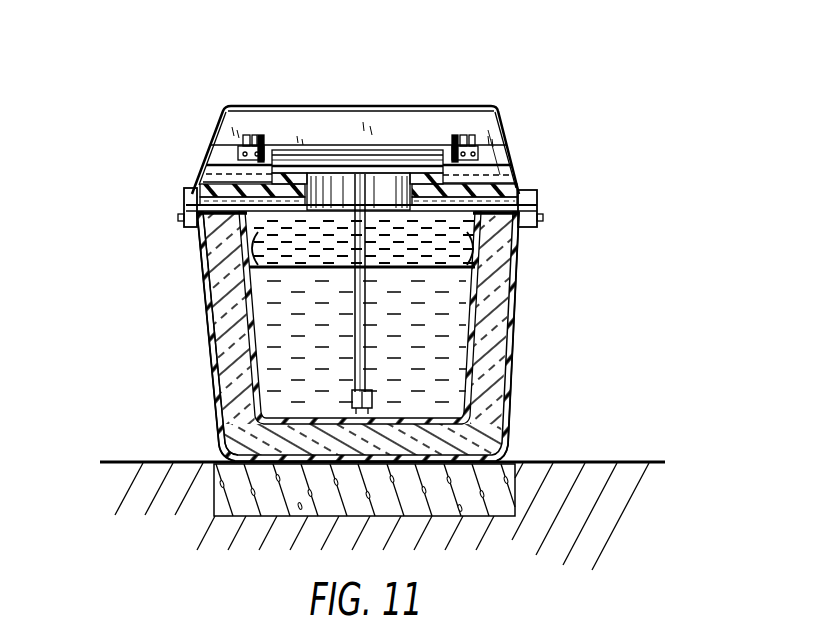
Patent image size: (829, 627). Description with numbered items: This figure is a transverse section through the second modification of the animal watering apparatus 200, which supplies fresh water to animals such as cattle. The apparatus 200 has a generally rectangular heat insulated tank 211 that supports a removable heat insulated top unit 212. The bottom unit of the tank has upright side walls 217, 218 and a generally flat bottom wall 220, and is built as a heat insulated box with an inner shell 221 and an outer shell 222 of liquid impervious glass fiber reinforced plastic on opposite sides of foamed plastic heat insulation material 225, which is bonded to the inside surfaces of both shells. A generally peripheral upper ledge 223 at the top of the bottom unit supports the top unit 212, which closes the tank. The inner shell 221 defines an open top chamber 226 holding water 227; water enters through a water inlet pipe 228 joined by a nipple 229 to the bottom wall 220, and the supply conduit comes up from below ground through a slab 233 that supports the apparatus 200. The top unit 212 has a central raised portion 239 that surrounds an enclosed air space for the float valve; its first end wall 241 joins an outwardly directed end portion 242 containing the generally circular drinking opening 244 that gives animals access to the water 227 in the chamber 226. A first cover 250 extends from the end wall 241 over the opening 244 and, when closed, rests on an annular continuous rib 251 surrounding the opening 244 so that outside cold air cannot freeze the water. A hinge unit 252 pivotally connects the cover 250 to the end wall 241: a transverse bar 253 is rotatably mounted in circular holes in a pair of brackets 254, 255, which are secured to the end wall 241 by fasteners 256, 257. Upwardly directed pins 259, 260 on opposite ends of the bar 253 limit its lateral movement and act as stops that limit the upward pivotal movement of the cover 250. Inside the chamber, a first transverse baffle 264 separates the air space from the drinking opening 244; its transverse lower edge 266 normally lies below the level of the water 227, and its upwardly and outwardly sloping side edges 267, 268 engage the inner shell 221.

The animal watering apparatus 200 is at (547, 80).
The heat insulated tank 211 is at (378, 336).
The top unit 212 is at (256, 96).
The side wall 217 is at (210, 344).
The side wall 218 is at (516, 318).
The bottom wall 220 is at (292, 441).
The inner shell 221 is at (264, 343).
The outer shell 222 is at (215, 371).
The upper ledge 223 is at (219, 214).
The heat insulation material 225 is at (238, 398).
The chamber 226 is at (362, 343).
The water 227 is at (476, 240).
The water inlet pipe 228 is at (352, 365).
The nipple 229 is at (373, 396).
The slab 233 is at (247, 504).
The central raised portion 239 is at (418, 105).
The first end wall 241 is at (483, 137).
The end portion 242 is at (478, 191).
The drinking opening 244 is at (358, 196).
The first cover 250 is at (311, 108).
The annular continuous rib 251 is at (413, 173).
The hinge unit 252 is at (346, 130).
The transverse bar 253 is at (373, 148).
The bracket 254 is at (243, 158).
The bracket 255 is at (478, 163).
The fastener 256 is at (225, 131).
The fastener 257 is at (492, 139).
The pin 259 is at (246, 135).
The stop pin 260 is at (471, 110).
The first transverse baffle 264 is at (422, 266).
The lower edge 266 is at (313, 276).
The side edge 267 is at (214, 255).
The side edge 268 is at (482, 258).